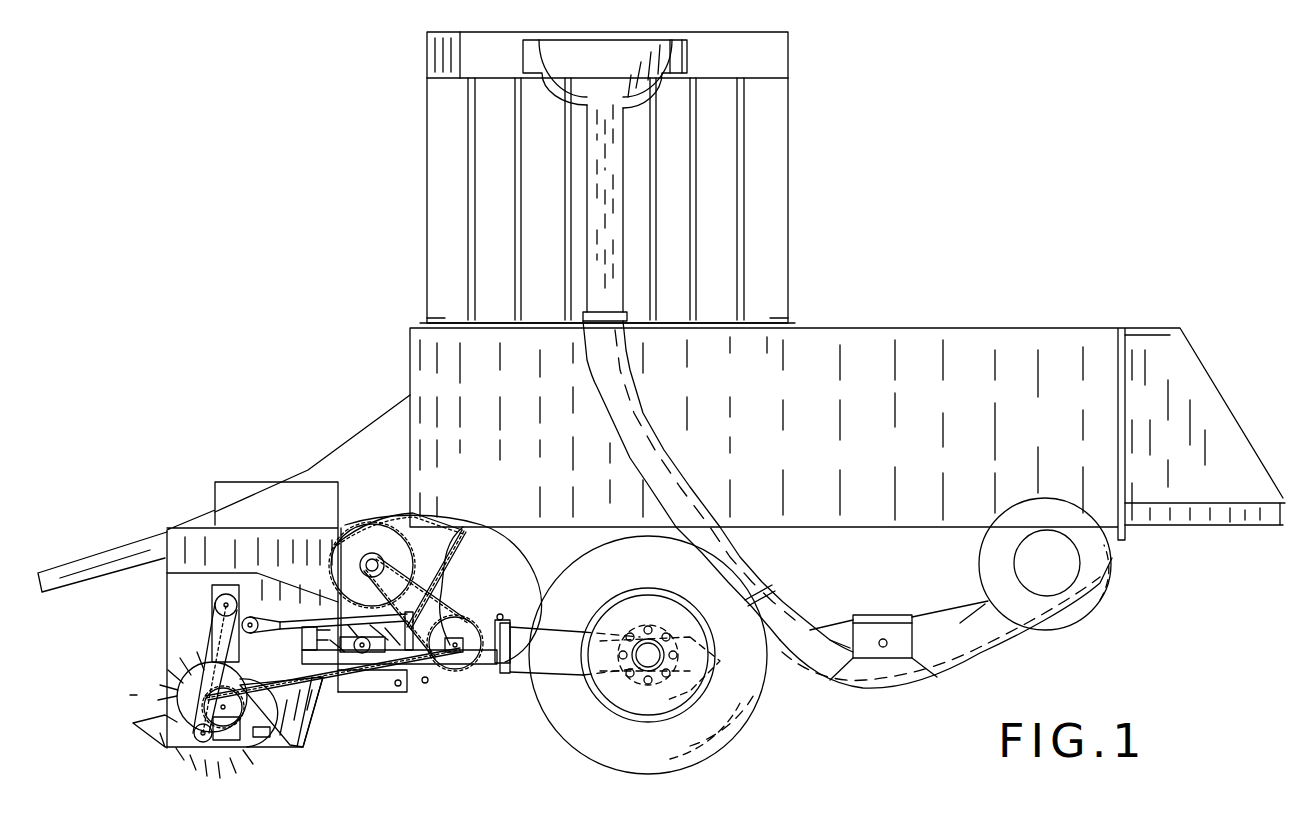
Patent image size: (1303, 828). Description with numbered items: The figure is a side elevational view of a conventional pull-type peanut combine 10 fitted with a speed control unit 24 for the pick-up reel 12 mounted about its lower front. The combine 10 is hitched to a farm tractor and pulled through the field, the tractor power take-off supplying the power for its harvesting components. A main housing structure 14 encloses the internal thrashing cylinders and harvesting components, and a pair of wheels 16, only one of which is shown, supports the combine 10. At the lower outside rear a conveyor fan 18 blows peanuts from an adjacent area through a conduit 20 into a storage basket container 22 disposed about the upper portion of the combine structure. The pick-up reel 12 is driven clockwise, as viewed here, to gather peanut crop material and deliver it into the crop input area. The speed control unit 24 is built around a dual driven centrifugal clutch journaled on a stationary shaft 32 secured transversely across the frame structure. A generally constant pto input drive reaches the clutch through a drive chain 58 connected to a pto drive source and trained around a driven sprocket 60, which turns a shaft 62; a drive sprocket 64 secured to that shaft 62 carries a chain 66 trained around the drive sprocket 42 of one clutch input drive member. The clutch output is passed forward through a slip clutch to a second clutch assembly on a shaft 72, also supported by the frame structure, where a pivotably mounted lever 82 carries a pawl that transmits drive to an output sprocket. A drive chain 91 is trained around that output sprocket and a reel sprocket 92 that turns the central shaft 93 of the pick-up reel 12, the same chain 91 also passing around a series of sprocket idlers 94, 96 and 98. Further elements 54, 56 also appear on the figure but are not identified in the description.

The peanut combine 10 is at (1020, 106).
The pick-up reel 12 is at (145, 693).
The main housing structure 14 is at (957, 347).
The wheels 16 is at (757, 702).
The conveyor fan 18 is at (1113, 568).
The conduit 20 is at (650, 424).
The storage basket container 22 is at (778, 136).
The speed control unit 24 is at (486, 688).
The stationary shaft 32 is at (463, 672).
The drive sprocket 42 is at (470, 618).
The wheel hub drive 54 is at (693, 730).
The drive shaft 56 is at (510, 675).
The drive chain 58 is at (358, 522).
The driven sprocket 60 is at (372, 556).
The shaft 62 is at (345, 548).
The drive sprocket 64 is at (418, 590).
The chain 66 is at (432, 615).
The shaft 72 is at (388, 690).
The lever 82 is at (430, 645).
The drive chain 91 is at (322, 682).
The reel sprocket 92 is at (240, 760).
The central shaft 93 is at (288, 715).
The sprocket idler 94 is at (196, 752).
The sprocket idler 96 is at (247, 617).
The sprocket idler 98 is at (250, 603).